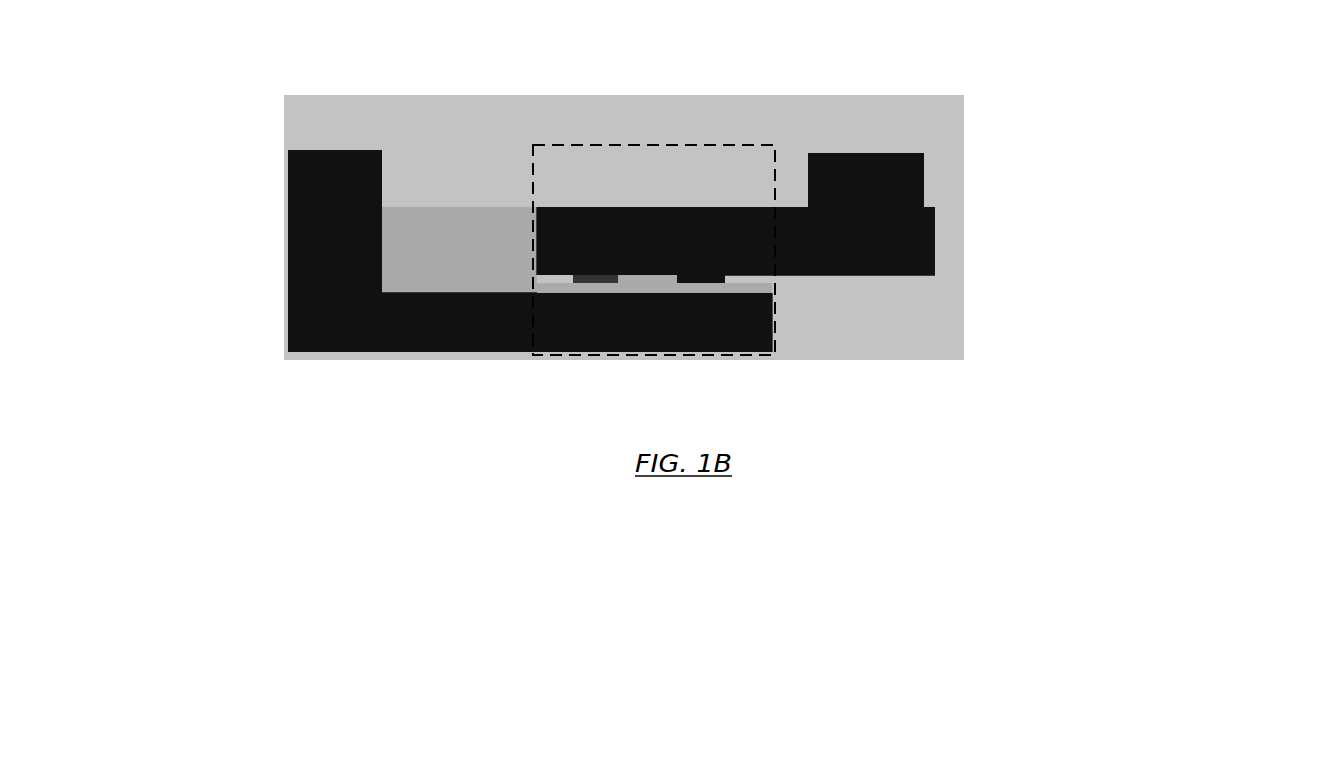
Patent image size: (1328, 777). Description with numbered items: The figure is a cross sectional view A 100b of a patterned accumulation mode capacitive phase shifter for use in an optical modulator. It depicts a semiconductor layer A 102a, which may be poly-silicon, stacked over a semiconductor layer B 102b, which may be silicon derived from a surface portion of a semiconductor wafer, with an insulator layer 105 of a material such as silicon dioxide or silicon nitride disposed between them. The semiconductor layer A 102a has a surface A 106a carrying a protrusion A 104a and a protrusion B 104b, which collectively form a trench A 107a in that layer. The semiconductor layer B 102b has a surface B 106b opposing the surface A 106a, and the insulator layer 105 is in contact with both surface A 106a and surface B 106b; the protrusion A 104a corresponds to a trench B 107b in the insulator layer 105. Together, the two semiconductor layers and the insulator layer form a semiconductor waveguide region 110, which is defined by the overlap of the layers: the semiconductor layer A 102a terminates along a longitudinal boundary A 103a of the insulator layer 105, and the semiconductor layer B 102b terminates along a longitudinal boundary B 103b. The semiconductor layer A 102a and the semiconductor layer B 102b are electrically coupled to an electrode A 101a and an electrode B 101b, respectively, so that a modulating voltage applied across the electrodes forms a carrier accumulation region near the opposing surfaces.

The cross sectional view A 100b is at (630, 180).
The electrode A 101a is at (999, 161).
The electrode B 101b is at (261, 221).
The semiconductor layer A 102a is at (916, 210).
The semiconductor layer B 102b is at (432, 311).
The longitudinal boundary A 103a is at (335, 187).
The longitudinal boundary B 103b is at (967, 337).
The protrusion A 104a is at (697, 245).
The protrusion B 104b is at (883, 261).
The insulator layer 105 is at (728, 275).
The surface A 106a is at (878, 291).
The surface B 106b is at (439, 269).
The trench A 107a is at (719, 259).
The trench B 107b is at (548, 305).
The semiconductor waveguide region 110 is at (765, 197).